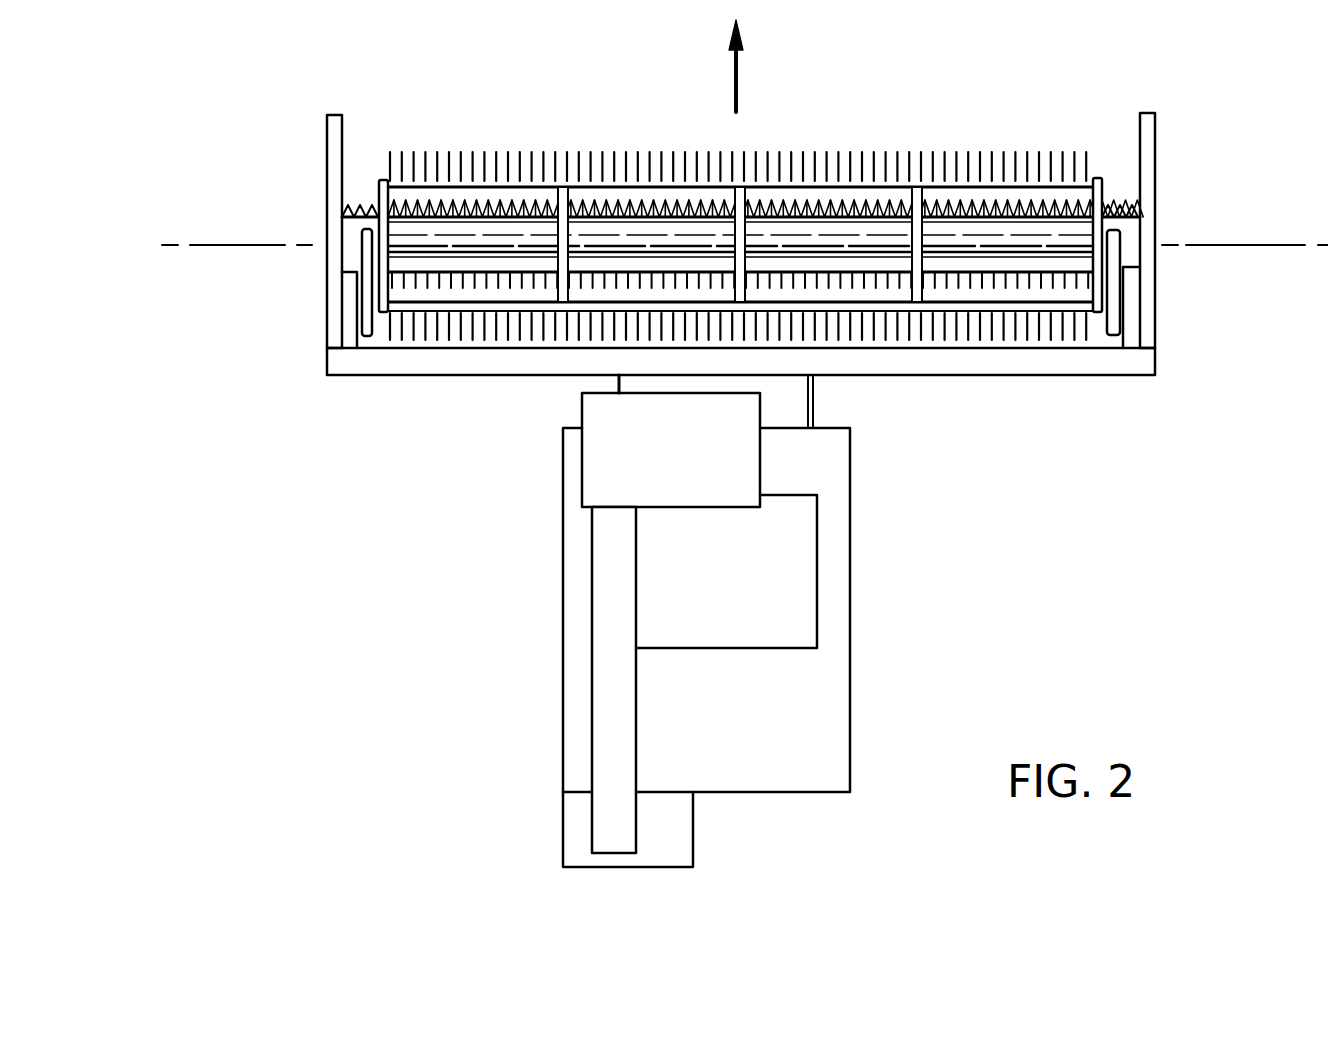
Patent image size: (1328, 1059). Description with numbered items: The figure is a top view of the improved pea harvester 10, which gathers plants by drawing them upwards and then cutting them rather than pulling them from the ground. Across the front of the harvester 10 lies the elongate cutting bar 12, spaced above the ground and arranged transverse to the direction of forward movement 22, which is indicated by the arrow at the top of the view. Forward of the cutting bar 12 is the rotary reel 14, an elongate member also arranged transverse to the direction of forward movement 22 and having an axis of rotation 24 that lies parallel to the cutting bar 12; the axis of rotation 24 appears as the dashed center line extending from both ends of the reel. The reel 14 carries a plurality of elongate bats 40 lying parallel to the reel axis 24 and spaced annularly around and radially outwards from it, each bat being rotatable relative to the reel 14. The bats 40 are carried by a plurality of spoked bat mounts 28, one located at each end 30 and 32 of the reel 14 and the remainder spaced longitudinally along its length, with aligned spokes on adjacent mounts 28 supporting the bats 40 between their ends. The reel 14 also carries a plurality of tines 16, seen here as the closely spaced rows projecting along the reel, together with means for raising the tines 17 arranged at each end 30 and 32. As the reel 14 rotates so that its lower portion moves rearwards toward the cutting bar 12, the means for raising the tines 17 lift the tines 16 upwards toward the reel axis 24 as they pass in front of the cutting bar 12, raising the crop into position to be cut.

The pea harvester 10 is at (937, 544).
The cutting bar 12 is at (350, 200).
The rotary reel 14 is at (742, 230).
The tines 16 is at (528, 158).
The means for raising the tines 17 is at (357, 289).
The direction of forward movement 22 is at (740, 84).
The axis of rotation 24 is at (222, 243).
The bat mounts 28 is at (374, 185).
The end of the reel 30 is at (364, 247).
The end of the reel 32 is at (1120, 243).
The bats 40 is at (473, 183).